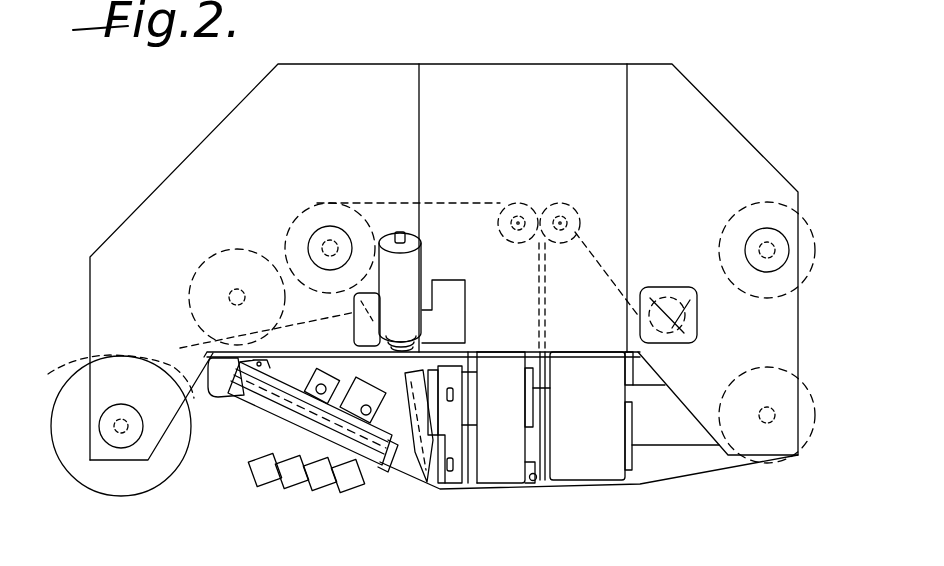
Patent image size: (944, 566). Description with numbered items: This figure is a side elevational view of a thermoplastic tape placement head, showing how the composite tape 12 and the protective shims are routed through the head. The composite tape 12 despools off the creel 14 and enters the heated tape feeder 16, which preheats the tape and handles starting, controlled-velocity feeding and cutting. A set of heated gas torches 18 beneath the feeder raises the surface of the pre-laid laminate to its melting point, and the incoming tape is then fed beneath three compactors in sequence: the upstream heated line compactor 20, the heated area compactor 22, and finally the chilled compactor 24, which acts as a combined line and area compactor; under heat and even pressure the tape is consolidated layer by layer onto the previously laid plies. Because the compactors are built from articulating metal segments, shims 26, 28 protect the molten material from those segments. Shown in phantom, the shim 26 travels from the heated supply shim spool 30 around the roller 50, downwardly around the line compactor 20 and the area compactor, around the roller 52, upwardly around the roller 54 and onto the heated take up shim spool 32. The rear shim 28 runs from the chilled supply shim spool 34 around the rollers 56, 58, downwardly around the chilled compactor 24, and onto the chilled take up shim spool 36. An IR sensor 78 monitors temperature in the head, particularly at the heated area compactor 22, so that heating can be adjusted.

The composite tape 12 is at (176, 350).
The creel 14 is at (122, 483).
The heated tape feeder 16 is at (285, 406).
The heated gas torches 18 is at (268, 475).
The heated line compactor 20 is at (427, 492).
The heated area compactor 22 is at (487, 492).
The chilled compactor 24 is at (585, 490).
The shim 26 is at (521, 200).
The rear shim 28 is at (596, 235).
The heated supply shim spool 30 is at (237, 266).
The heated take up shim spool 32 is at (313, 212).
The chilled supply shim spool 34 is at (803, 240).
The chilled take up shim spool 36 is at (808, 413).
The roller 50 is at (356, 323).
The roller 52 is at (533, 481).
The roller 54 is at (527, 205).
The roller 56 is at (700, 335).
The roller 58 is at (567, 203).
The IR sensor 78 is at (410, 278).